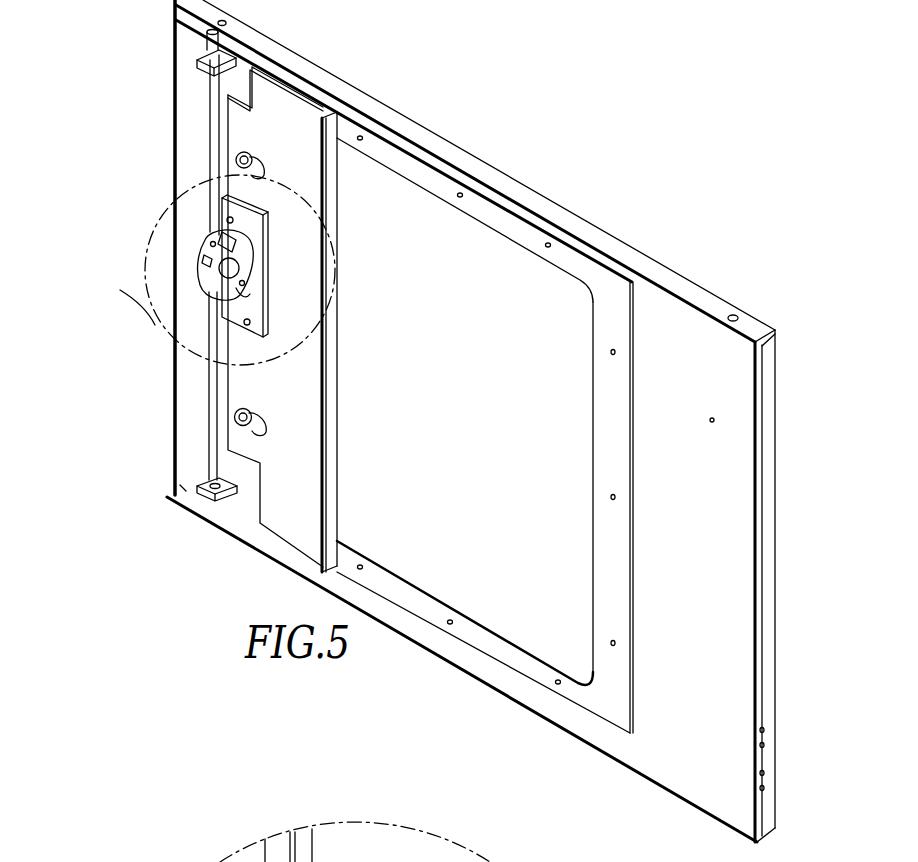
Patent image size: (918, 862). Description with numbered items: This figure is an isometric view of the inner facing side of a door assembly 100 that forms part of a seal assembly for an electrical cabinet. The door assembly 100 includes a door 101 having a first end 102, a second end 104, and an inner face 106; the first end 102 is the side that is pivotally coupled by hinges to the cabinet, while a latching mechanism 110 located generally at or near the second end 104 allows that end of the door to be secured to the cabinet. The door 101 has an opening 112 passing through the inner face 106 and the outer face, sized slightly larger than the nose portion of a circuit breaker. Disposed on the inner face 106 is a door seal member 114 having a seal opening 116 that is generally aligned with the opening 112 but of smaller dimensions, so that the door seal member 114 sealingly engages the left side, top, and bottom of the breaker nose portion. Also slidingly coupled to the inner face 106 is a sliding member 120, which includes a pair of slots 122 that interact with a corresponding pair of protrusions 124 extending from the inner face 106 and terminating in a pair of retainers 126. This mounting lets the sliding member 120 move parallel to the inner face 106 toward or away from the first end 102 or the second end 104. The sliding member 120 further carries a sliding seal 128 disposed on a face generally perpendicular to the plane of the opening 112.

The door assembly 100 is at (460, 421).
The door 101 is at (343, 84).
The first end 102 is at (771, 637).
The second end 104 is at (172, 98).
The inner face 106 is at (672, 757).
The latching mechanism 110 is at (195, 243).
The opening 112 is at (404, 376).
The door seal member 114 is at (487, 647).
The seal opening 116 is at (588, 521).
The sliding member 120 is at (320, 417).
The slots 122 is at (264, 170).
The protrusions 124 is at (232, 172).
The retainers 126 is at (255, 141).
The sliding seal 128 is at (333, 342).